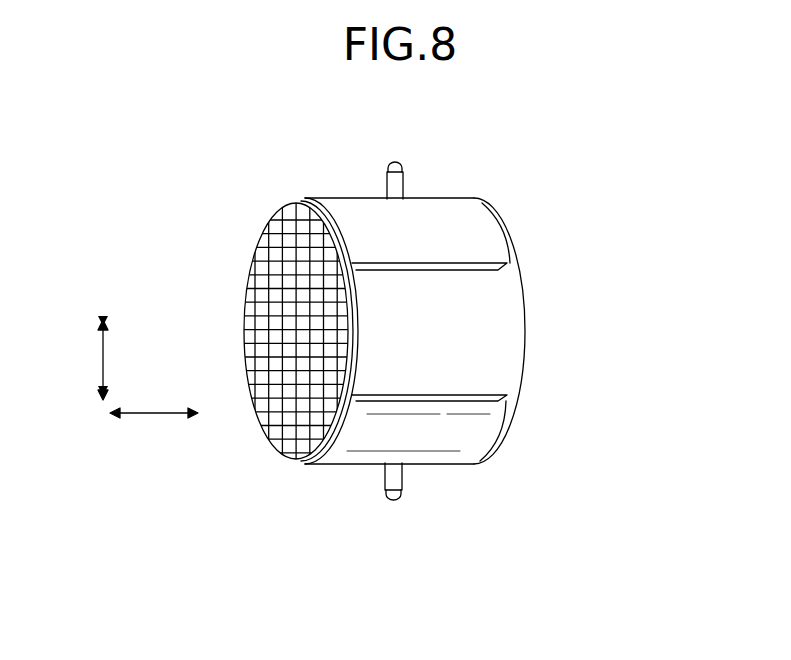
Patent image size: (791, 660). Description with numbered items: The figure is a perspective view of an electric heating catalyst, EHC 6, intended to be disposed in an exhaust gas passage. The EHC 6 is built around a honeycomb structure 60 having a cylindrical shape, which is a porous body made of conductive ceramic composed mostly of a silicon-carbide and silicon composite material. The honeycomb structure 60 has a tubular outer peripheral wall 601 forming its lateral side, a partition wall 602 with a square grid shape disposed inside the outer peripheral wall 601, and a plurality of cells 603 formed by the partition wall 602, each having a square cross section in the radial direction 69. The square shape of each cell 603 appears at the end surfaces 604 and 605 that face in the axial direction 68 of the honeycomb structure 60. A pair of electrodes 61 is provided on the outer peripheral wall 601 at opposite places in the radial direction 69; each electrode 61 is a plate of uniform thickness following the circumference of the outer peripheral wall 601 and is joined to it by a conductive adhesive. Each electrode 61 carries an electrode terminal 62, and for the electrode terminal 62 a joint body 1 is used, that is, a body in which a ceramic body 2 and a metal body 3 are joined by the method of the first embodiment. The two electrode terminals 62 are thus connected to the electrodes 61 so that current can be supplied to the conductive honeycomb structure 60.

The electric heating catalyst (EHC) 6 is at (566, 206).
The honeycomb structure 60 is at (525, 372).
The outer peripheral wall 601 is at (472, 321).
The partition wall 602 is at (291, 252).
The cells 603 is at (290, 382).
The end surface 604 is at (287, 283).
The end surface 605 is at (527, 338).
The electrodes 61 is at (368, 218).
The joint body 1 is at (483, 100).
The electrode terminals 62 is at (476, 333).
The ceramic body 2 is at (397, 186).
The metal body 3 is at (395, 163).
The axial direction 68 is at (154, 428).
The radial direction 69 is at (85, 360).